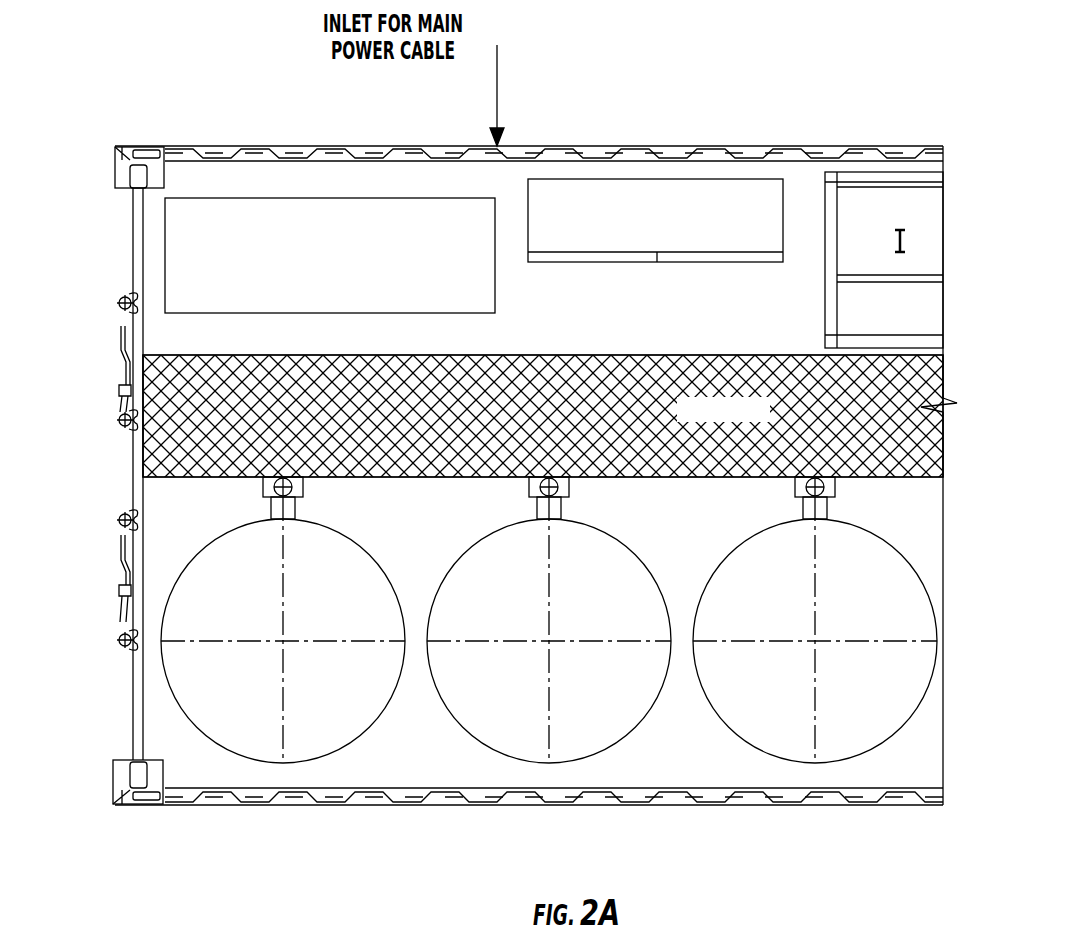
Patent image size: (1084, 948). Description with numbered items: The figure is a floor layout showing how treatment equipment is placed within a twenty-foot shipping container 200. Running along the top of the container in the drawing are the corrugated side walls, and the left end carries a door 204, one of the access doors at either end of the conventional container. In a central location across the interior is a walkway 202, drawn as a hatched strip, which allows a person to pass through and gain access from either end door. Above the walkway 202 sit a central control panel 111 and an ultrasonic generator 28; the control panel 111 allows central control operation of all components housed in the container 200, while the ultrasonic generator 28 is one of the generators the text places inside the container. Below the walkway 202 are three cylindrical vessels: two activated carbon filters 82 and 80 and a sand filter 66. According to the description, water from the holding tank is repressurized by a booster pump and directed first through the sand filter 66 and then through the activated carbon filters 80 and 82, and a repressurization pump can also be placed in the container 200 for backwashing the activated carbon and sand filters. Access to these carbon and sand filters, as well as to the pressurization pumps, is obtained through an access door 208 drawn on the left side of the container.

The shipping container 200 is at (716, 806).
The door 204 is at (132, 255).
The walkway 202 is at (152, 443).
The access door 208 is at (128, 625).
The central control panel 111 is at (495, 290).
The ultrasonic generator 28 is at (635, 181).
The activated carbon filter 82 is at (345, 538).
The activated carbon filter 80 is at (600, 536).
The sand filter 66 is at (862, 531).